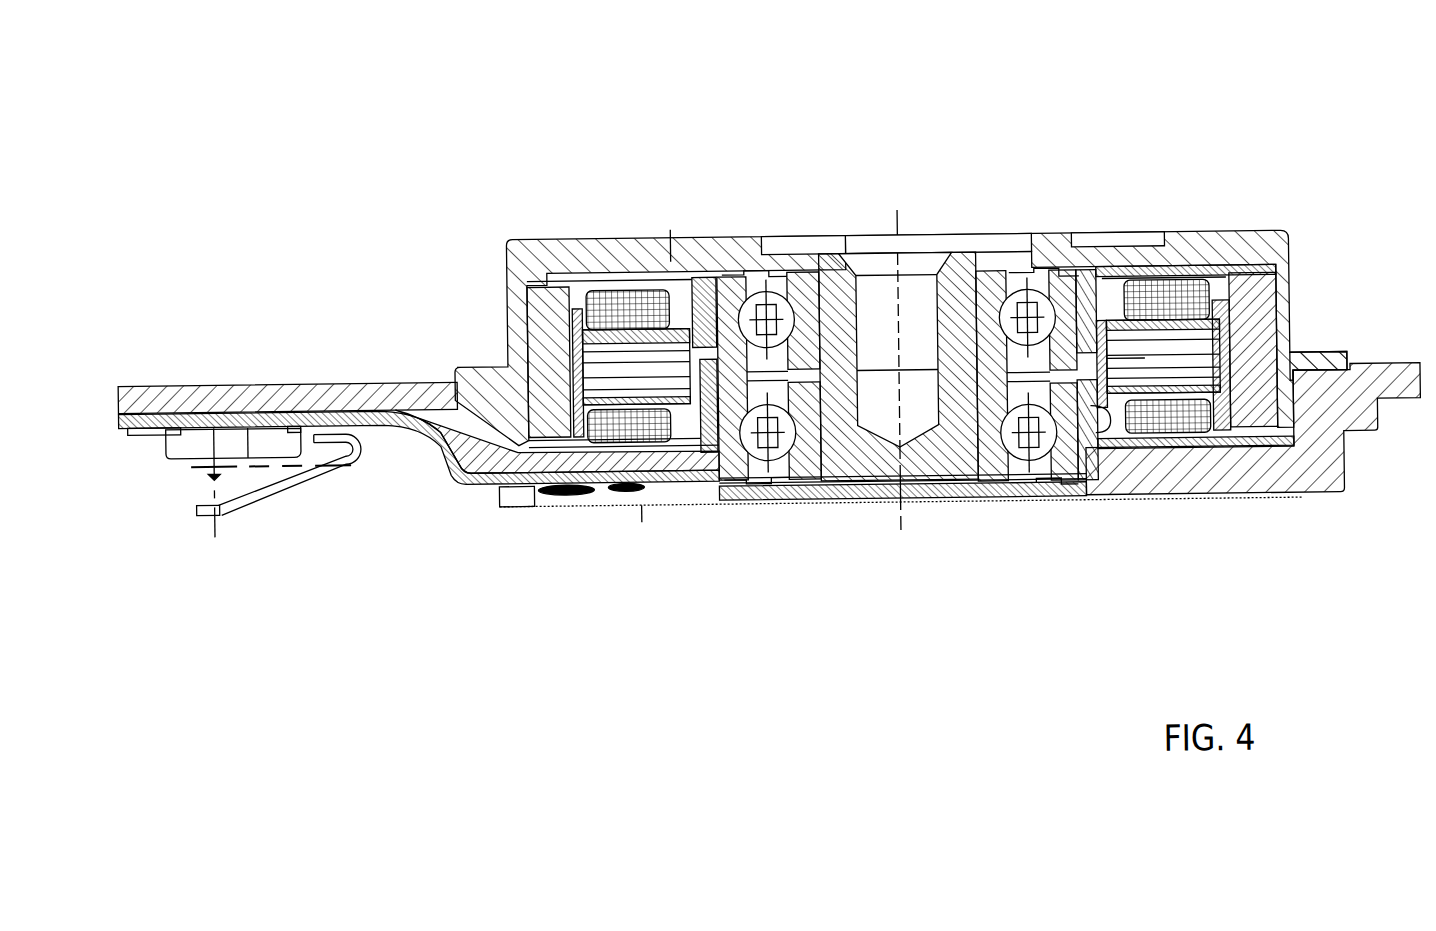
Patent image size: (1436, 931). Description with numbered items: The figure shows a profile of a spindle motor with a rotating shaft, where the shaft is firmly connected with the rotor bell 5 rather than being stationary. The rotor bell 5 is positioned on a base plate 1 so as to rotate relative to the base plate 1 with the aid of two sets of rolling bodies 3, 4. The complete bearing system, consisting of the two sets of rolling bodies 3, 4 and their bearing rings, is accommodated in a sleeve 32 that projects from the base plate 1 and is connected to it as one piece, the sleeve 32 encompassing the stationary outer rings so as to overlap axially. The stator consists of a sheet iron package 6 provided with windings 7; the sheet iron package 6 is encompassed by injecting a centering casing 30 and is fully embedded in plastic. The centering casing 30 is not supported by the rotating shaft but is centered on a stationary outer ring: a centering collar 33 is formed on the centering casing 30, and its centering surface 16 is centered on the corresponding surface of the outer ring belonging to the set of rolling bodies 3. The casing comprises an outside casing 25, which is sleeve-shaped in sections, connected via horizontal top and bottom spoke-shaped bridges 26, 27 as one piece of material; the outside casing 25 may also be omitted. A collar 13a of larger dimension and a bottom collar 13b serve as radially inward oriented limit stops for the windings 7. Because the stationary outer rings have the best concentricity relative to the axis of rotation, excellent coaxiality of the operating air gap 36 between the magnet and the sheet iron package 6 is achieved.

The base plate 1 is at (1303, 465).
The set of rolling bodies 3 is at (1012, 304).
The set of rolling bodies 4 is at (1020, 450).
The rotor bell 5 is at (1289, 242).
The sheet iron package 6 is at (1145, 361).
The windings 7 is at (1190, 421).
The collar 13a is at (1216, 264).
The bottom collar 13b is at (1238, 449).
The centering surface 16 is at (1047, 294).
The outside casing 25 is at (1237, 336).
The top spoke-shaped bridge 26 is at (1179, 295).
The bottom spoke-shaped bridge 27 is at (1158, 406).
The centering casing 30 is at (1250, 359).
The sleeve 32 is at (1102, 447).
The centering collar 33 is at (1076, 284).
The operating air gap 36 is at (1244, 378).